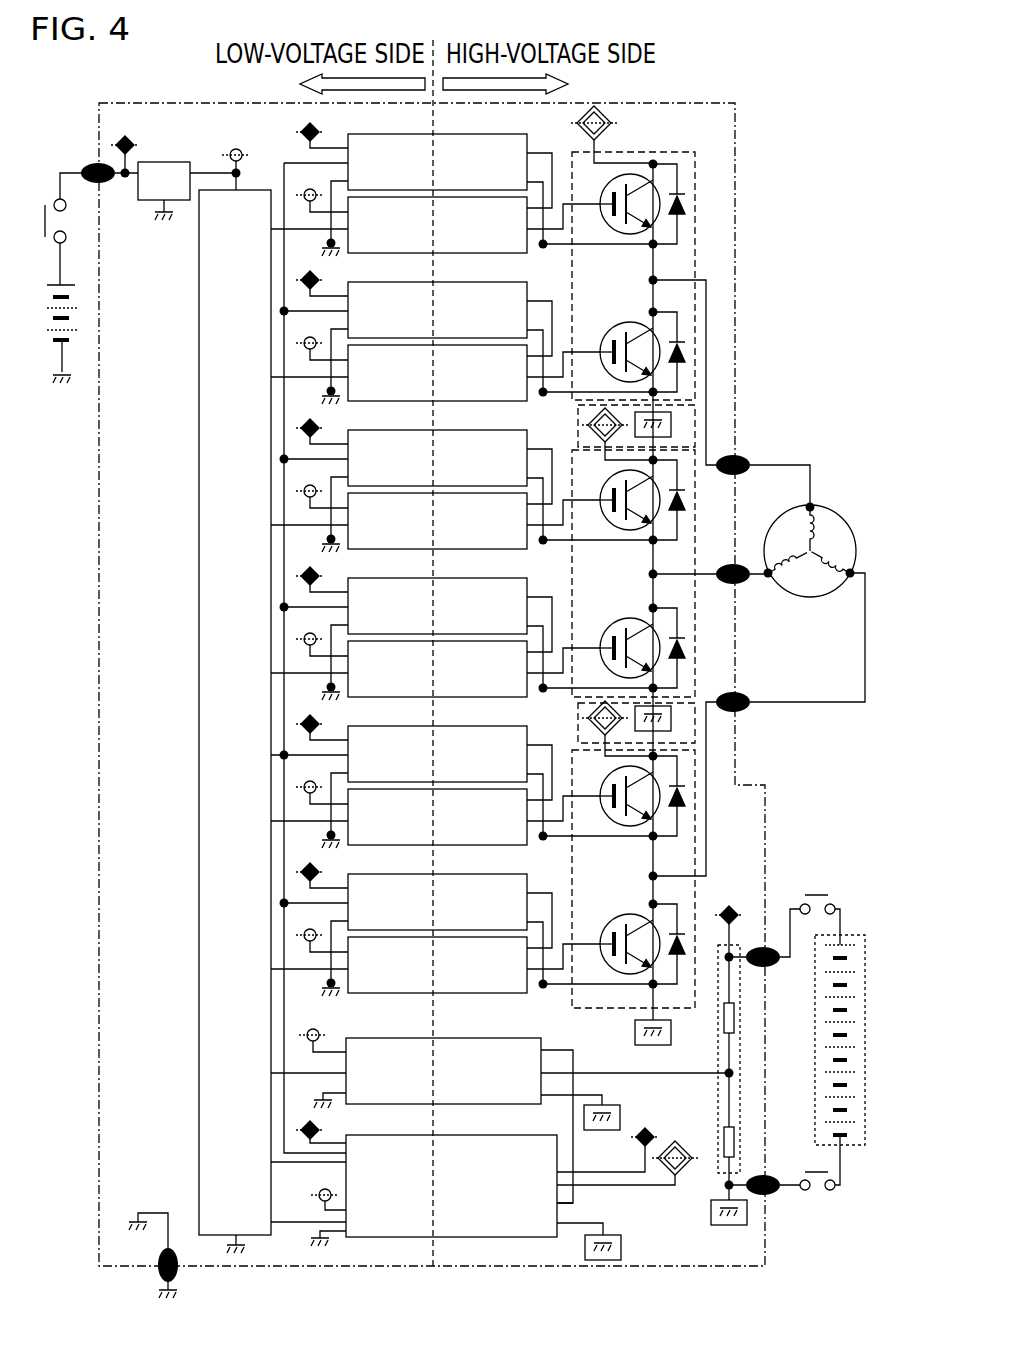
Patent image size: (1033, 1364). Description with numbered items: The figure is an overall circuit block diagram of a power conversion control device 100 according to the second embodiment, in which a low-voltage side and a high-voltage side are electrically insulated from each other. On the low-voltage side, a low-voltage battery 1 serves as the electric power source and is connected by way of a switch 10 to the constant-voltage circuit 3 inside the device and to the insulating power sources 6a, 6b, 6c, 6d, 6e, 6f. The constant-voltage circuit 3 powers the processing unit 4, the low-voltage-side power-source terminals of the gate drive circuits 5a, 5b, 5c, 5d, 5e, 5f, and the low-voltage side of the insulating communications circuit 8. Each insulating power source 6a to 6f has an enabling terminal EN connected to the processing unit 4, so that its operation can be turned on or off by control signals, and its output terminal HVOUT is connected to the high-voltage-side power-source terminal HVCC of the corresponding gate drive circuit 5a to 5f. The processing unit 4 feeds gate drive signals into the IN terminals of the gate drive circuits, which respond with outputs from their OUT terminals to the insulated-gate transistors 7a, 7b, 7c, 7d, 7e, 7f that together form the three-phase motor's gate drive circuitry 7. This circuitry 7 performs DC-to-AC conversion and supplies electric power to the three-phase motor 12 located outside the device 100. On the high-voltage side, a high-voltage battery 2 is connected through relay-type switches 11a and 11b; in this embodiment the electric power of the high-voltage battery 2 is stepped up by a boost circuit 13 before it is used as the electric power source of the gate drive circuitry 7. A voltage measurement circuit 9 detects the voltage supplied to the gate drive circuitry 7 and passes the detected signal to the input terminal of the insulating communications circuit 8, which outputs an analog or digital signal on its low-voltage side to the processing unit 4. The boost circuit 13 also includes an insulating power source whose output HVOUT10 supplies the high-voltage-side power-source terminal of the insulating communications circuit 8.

The power conversion control device 100 is at (188, 103).
The switch 10 is at (52, 198).
The constant-voltage circuit 3 is at (176, 162).
The processing unit 4 is at (272, 190).
The low-voltage battery 1 is at (70, 285).
The gate drive circuit 5a is at (392, 253).
The gate drive circuit 5b is at (392, 401).
The gate drive circuit 5c is at (392, 549).
The gate drive circuit 5d is at (392, 697).
The gate drive circuit 5e is at (392, 845).
The gate drive circuit 5f is at (392, 993).
The insulating power source 6a is at (527, 134).
The insulating power source 6b is at (527, 282).
The insulating power source 6c is at (527, 430).
The insulating power source 6d is at (527, 578).
The insulating power source 6e is at (527, 726).
The insulating power source 6f is at (527, 874).
The three-phase motor's gate drive circuitry 7 is at (636, 575).
The insulated-gate transistor 7a is at (632, 235).
The insulated-gate transistor 7b is at (615, 316).
The insulated-gate transistor 7c is at (632, 531).
The insulated-gate transistor 7d is at (612, 619).
The insulated-gate transistor 7e is at (632, 827).
The insulated-gate transistor 7f is at (612, 915).
The three-phase motor 12 is at (832, 507).
The insulating communications circuit 8 is at (510, 1038).
The voltage measurement circuit 9 is at (718, 1110).
The switch 11a is at (832, 893).
The switch 11b is at (812, 1195).
The high-voltage battery 2 is at (858, 935).
The boost circuit 13 is at (512, 1237).